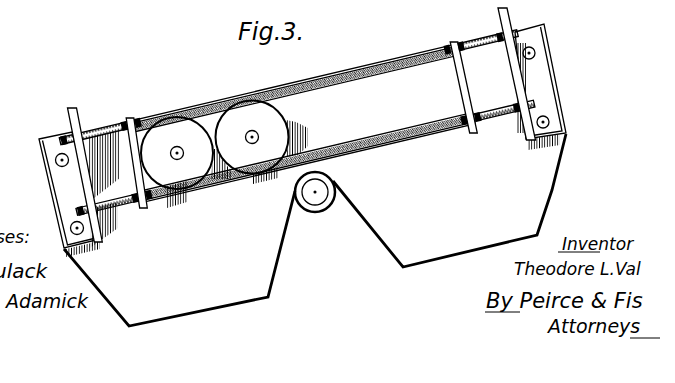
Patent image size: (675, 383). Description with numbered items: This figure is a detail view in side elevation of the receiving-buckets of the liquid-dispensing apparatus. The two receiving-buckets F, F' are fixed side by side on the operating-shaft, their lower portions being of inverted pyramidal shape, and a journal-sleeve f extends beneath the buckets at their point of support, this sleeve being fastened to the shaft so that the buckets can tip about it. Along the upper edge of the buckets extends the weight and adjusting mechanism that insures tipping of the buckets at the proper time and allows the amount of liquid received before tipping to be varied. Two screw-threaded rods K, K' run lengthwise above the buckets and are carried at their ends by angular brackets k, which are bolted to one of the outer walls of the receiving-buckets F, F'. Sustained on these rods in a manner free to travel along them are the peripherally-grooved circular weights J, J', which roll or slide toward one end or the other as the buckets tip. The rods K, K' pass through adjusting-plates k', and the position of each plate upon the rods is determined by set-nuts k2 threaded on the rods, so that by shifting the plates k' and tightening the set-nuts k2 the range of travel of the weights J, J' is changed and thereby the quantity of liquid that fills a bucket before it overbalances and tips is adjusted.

The angular bracket k is at (302, 132).
The adjusting-plate k' is at (300, 125).
The set-nut k2 is at (125, 117).
The rod K is at (305, 157).
The rod K' is at (289, 89).
The peripherally-grooved circular weight J is at (186, 153).
The peripherally-grooved circular weight J' is at (262, 137).
The receiving-bucket F is at (179, 258).
The receiving-bucket F' is at (449, 200).
The journal-sleeve f is at (322, 209).